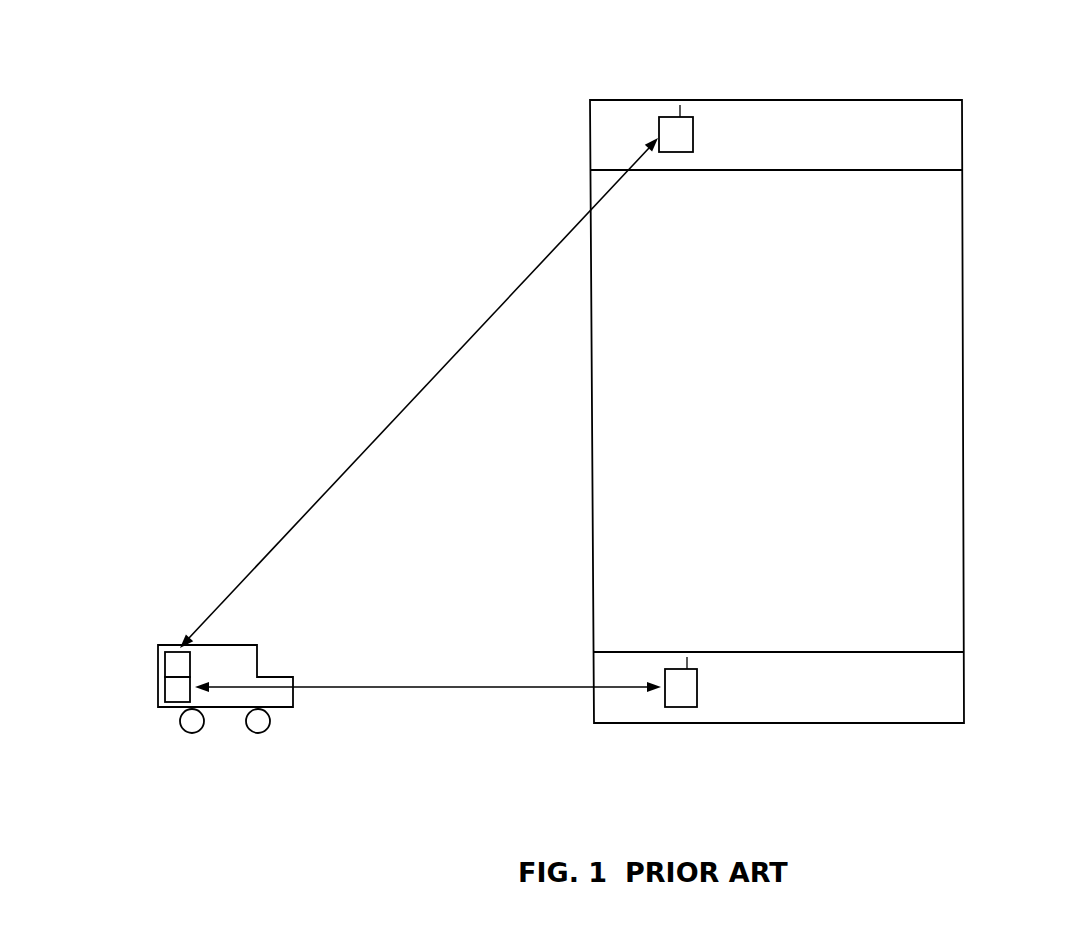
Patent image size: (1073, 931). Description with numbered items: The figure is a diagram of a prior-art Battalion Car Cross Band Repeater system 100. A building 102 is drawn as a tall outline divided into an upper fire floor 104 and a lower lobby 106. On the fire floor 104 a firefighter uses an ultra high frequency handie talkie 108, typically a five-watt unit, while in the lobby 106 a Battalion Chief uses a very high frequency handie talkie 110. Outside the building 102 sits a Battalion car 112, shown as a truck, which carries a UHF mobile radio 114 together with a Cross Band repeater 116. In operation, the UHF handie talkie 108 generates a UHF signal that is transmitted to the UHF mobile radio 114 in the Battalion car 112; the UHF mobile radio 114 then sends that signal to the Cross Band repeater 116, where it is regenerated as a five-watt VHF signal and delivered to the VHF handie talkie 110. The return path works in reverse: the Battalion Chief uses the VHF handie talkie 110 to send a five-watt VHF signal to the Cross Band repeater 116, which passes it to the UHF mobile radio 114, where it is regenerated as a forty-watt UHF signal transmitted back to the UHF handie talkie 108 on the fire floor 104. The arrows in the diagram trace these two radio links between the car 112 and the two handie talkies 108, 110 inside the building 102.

The Battalion Car Cross Band Repeater system 100 is at (548, 48).
The building 102 is at (963, 437).
The fire floor 104 is at (812, 172).
The lobby 106 is at (873, 650).
The UHF handie talkie 108 is at (680, 106).
The VHF handie talkie 110 is at (680, 707).
The Battalion car 112 is at (227, 645).
The UHF mobile radio 114 is at (165, 662).
The Cross Band repeater 116 is at (178, 702).